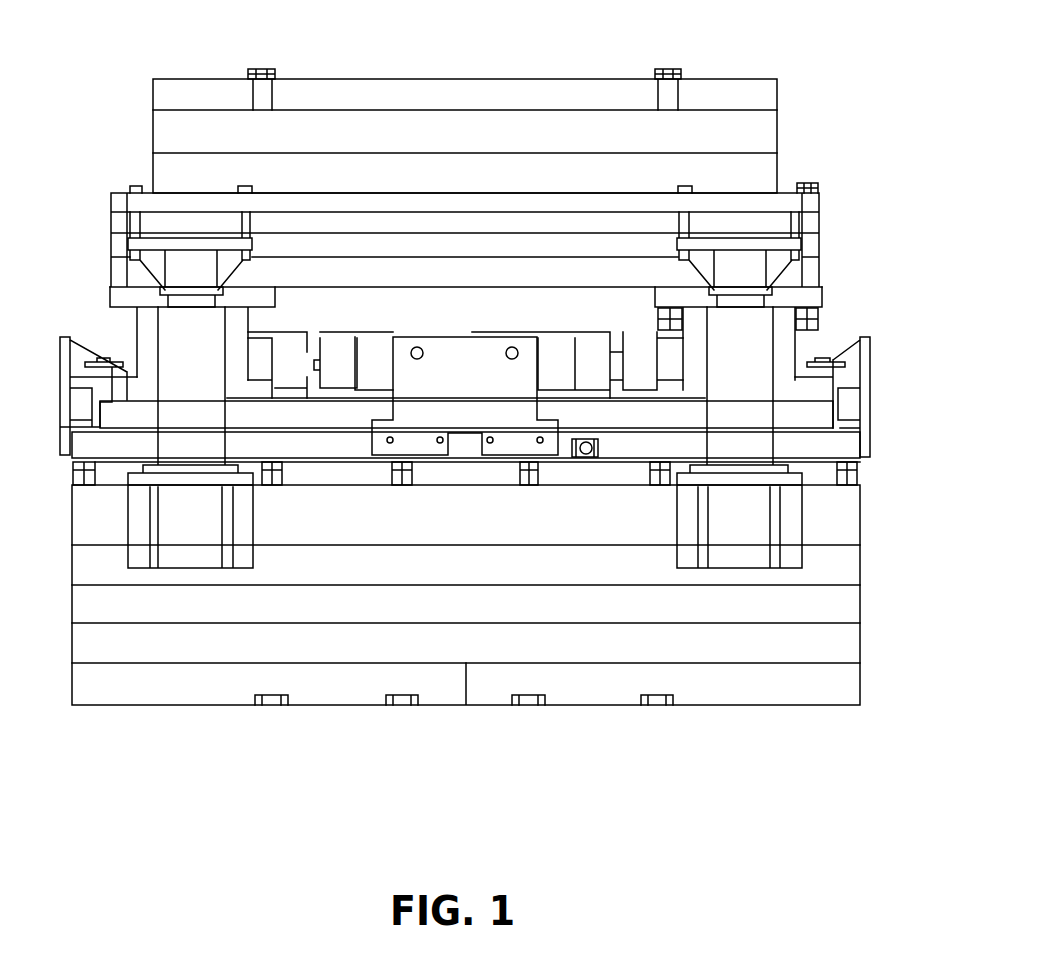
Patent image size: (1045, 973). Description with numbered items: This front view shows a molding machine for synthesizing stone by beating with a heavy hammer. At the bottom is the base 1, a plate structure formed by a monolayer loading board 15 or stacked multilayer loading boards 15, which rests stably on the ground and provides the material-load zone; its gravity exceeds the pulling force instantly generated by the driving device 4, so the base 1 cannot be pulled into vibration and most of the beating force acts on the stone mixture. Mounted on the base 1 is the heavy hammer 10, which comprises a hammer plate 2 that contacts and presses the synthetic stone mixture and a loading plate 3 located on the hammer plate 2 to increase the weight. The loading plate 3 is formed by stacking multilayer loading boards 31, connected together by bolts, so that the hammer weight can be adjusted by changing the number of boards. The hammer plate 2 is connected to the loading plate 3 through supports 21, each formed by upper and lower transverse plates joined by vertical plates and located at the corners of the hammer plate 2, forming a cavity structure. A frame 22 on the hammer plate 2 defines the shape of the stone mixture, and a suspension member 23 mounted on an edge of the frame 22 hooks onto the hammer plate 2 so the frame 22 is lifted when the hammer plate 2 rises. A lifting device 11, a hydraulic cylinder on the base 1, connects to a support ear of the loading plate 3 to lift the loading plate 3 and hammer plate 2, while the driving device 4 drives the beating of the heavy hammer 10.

The base 1 is at (197, 650).
The hammer plate 2 is at (677, 415).
The loading plate 3 is at (507, 168).
The driving device 4 is at (340, 355).
The heavy hammer 10 is at (134, 169).
The lifting device 11 is at (182, 343).
The loading board 15 is at (832, 523).
The support 21 is at (807, 297).
The frame 22 is at (93, 445).
The suspension member 23 is at (65, 385).
The loading board 31 is at (712, 98).